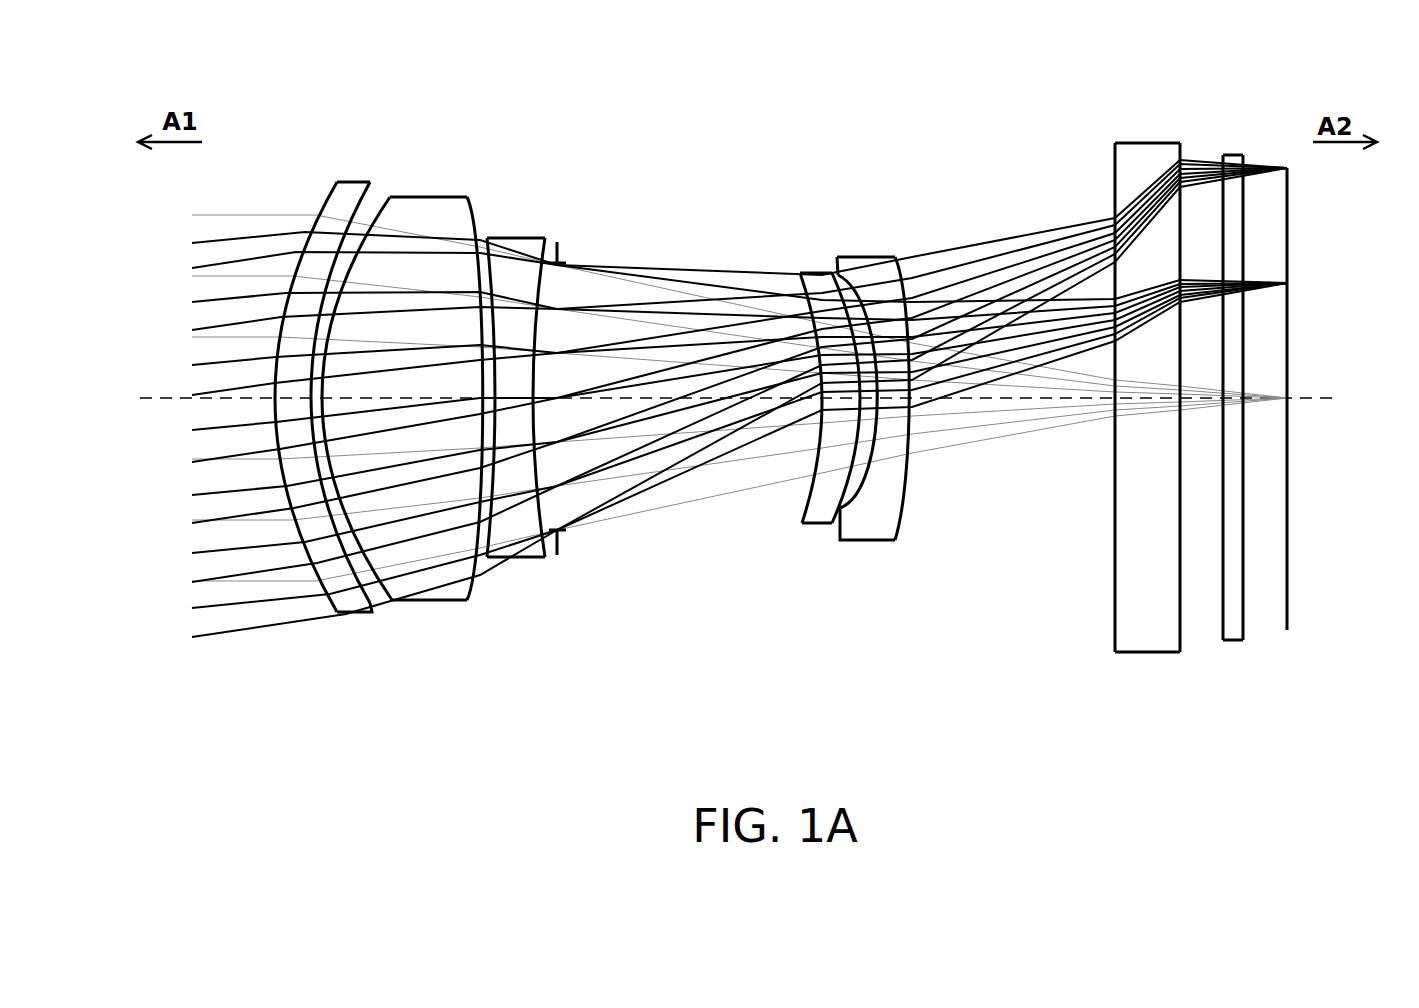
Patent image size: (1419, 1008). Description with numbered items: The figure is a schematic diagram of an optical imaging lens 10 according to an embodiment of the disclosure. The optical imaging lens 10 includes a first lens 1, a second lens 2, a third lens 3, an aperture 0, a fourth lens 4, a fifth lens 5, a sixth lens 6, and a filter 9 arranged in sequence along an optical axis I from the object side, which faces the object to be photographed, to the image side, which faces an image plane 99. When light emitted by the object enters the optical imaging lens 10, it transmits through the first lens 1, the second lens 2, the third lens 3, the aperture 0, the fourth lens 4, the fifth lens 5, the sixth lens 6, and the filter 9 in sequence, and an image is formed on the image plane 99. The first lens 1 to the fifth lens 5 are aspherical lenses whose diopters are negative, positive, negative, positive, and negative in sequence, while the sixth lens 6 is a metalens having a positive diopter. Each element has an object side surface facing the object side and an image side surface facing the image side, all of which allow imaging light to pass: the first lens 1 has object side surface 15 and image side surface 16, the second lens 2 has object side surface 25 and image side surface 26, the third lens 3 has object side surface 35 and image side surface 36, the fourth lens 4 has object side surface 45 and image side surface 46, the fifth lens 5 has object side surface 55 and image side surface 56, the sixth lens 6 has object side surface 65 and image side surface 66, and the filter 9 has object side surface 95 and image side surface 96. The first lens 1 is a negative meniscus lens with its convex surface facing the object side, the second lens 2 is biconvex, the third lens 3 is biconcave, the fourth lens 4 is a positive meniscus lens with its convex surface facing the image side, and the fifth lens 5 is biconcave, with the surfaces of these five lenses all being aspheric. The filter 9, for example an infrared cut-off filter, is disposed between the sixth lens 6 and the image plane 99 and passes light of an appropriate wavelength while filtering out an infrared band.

The optical imaging lens 10 is at (1396, 752).
The optical axis I is at (139, 397).
The aperture 0 is at (558, 258).
The first lens 1 is at (355, 180).
The object side surface of the first lens 15 is at (315, 578).
The image side surface of the first lens 16 is at (355, 560).
The second lens 2 is at (428, 197).
The object side surface of the second lens 25 is at (370, 562).
The image side surface of the second lens 26 is at (475, 565).
The third lens 3 is at (515, 237).
The object side surface of the third lens 35 is at (490, 528).
The image side surface of the third lens 36 is at (537, 463).
The fourth lens 4 is at (815, 272).
The object side surface of the fourth lens 45 is at (809, 497).
The image side surface of the fourth lens 46 is at (842, 503).
The fifth lens 5 is at (866, 257).
The object side surface of the fifth lens 55 is at (866, 480).
The image side surface of the fifth lens 56 is at (913, 477).
The sixth lens 6 is at (1145, 143).
The object side surface of the sixth lens 65 is at (1115, 636).
The image side surface of the sixth lens 66 is at (1181, 636).
The filter 9 is at (1235, 155).
The object side surface of the filter 95 is at (1223, 633).
The image side surface of the filter 96 is at (1244, 624).
The image plane 99 is at (1288, 624).